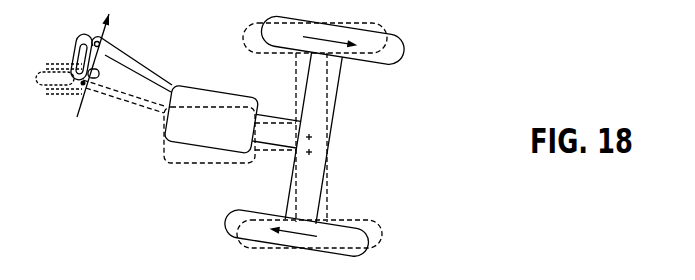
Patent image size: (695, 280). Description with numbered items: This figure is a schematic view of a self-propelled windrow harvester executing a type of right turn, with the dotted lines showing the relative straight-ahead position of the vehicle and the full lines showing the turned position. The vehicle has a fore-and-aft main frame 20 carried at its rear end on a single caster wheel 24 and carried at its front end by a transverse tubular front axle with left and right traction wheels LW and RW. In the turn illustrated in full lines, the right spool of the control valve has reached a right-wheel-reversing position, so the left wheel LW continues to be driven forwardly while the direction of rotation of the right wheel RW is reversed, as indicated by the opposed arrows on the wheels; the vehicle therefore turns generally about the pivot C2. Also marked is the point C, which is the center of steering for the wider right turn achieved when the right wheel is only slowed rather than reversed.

The caster wheel 24 is at (76, 48).
The main frame 20 is at (143, 66).
The left traction wheel LW is at (393, 61).
The right traction wheel RW is at (354, 252).
The center of steering C is at (312, 151).
The pivot C2 is at (312, 136).